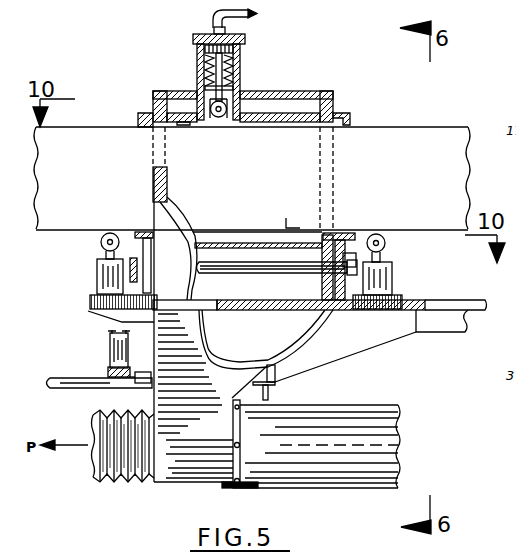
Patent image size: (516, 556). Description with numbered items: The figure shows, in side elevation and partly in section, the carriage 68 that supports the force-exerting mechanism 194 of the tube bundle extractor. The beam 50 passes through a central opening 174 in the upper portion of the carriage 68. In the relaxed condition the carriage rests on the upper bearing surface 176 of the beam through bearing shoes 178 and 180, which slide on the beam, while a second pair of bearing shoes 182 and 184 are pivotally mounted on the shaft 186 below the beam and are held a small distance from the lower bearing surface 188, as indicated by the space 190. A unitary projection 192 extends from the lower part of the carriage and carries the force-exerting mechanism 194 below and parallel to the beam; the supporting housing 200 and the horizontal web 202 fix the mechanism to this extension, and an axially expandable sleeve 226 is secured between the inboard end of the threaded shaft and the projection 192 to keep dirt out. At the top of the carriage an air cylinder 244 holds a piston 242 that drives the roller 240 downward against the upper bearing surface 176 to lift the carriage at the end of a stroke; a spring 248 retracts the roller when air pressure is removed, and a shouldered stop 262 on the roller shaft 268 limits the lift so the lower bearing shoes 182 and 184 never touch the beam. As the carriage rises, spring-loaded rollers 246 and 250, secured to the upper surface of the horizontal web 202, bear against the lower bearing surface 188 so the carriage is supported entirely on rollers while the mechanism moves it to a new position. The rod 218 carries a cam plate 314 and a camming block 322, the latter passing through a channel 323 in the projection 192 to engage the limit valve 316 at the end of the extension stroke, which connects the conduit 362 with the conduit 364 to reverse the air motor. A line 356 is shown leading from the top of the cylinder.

The fluid line 356 is at (258, 17).
The piston 242 is at (203, 49).
The air cylinder 244 is at (197, 68).
The shouldered stop 262 is at (241, 62).
The spring 248 is at (224, 60).
The shaft 268 is at (242, 78).
The carriage 68 is at (324, 88).
The bearing shoe 178 is at (343, 114).
The upper bearing surface 176 is at (425, 126).
The bearing shoe 180 is at (147, 129).
The roller 240 is at (222, 116).
The central opening 174 is at (286, 128).
The bearing shoe 184 is at (145, 231).
The beam 50 is at (432, 189).
The space 190 is at (341, 233).
The bearing shoe 182 is at (346, 236).
The spring-loaded roller 246 is at (386, 246).
The lower bearing surface 188 is at (450, 232).
The spring-loaded roller 250 is at (101, 247).
The shaft 186 is at (231, 274).
The conduit 364 is at (111, 332).
The conduit 362 is at (109, 341).
The limit valve 316 is at (109, 373).
The camming block 322 is at (141, 376).
The rod 218 is at (66, 391).
The axially expandable sleeve 226 is at (118, 479).
The unitary projection 192 is at (180, 483).
The force-exerting mechanism 194 is at (314, 495).
The supporting housing 200 is at (375, 406).
The horizontal web 202 is at (473, 313).
The cam plate 314 is at (272, 393).
The channel 323 is at (276, 366).